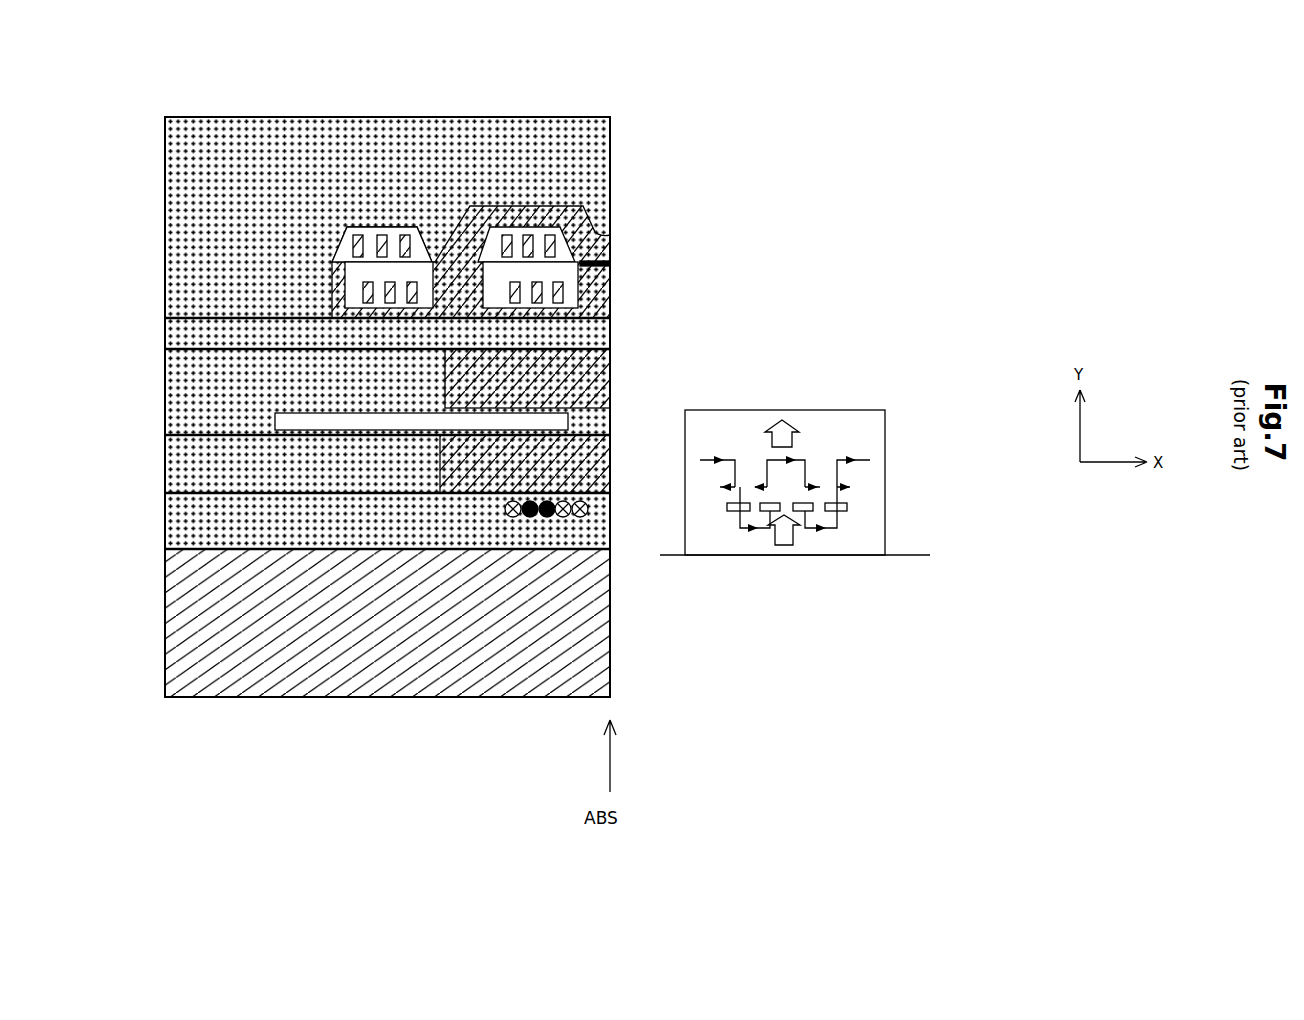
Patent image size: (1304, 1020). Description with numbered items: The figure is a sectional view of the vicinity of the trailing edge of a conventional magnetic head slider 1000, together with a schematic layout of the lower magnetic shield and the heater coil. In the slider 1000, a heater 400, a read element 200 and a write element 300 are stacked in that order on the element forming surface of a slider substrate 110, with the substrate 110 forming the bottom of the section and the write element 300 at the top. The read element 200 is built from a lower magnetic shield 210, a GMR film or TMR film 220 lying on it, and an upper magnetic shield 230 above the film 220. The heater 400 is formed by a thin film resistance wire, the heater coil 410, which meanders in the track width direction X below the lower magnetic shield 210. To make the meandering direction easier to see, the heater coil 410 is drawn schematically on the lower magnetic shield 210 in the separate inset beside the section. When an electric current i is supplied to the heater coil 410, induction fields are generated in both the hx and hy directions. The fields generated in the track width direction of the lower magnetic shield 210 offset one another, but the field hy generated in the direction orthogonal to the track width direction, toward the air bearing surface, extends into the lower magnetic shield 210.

The magnetic head slider 1000 is at (610, 93).
The slider substrate 110 is at (567, 651).
The read element 200 is at (727, 320).
The lower magnetic shield 210 is at (612, 462).
The GMR film or TMR film 220 is at (603, 423).
The upper magnetic shield 230 is at (606, 375).
The write element 300 is at (600, 248).
The heater 400 is at (885, 440).
The heater coil 410 is at (742, 530).